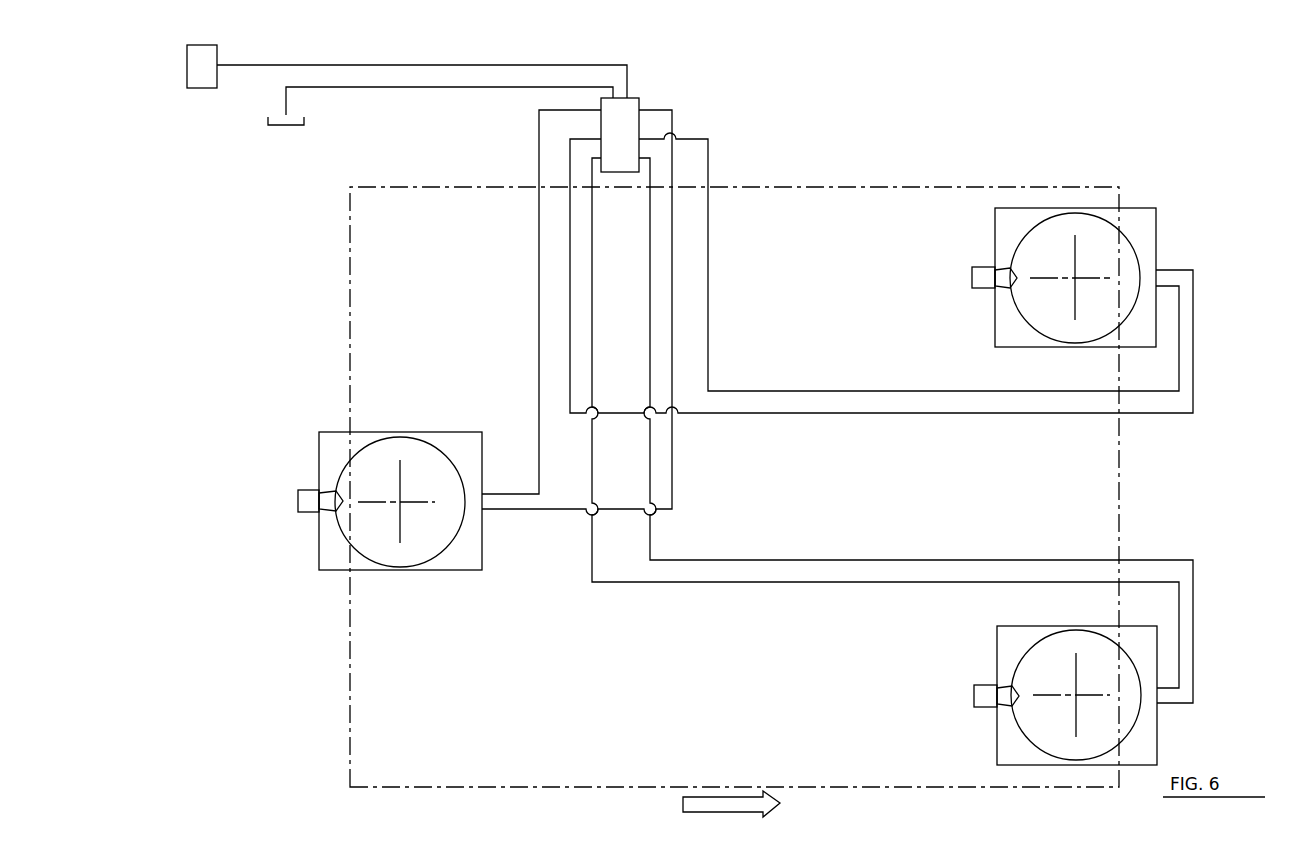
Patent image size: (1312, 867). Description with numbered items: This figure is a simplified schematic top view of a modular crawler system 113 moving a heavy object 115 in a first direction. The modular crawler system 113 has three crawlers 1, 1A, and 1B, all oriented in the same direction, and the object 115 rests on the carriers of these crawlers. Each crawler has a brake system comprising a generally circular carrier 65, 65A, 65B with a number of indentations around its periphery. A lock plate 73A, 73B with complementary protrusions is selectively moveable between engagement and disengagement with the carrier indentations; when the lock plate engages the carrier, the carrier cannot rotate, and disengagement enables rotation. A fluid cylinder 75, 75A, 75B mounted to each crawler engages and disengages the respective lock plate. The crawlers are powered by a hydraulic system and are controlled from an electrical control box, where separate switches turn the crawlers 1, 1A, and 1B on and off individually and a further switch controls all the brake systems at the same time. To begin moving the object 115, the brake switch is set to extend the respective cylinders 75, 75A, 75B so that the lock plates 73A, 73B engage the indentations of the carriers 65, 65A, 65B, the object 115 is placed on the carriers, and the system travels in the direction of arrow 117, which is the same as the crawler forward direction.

The crawler 1 is at (432, 575).
The crawler 1A is at (993, 335).
The crawler 1B is at (995, 625).
The carrier 65 is at (450, 445).
The carrier 65A is at (1020, 226).
The carrier 65B is at (1017, 653).
The lock plate 73A is at (327, 508).
The lock plate 73B is at (1003, 705).
The fluid cylinder 75 is at (298, 502).
The fluid cylinder 75A is at (980, 282).
The fluid cylinder 75B is at (983, 698).
The modular crawler system 113 is at (1210, 328).
The object 115 is at (350, 723).
The arrow 117 is at (717, 812).